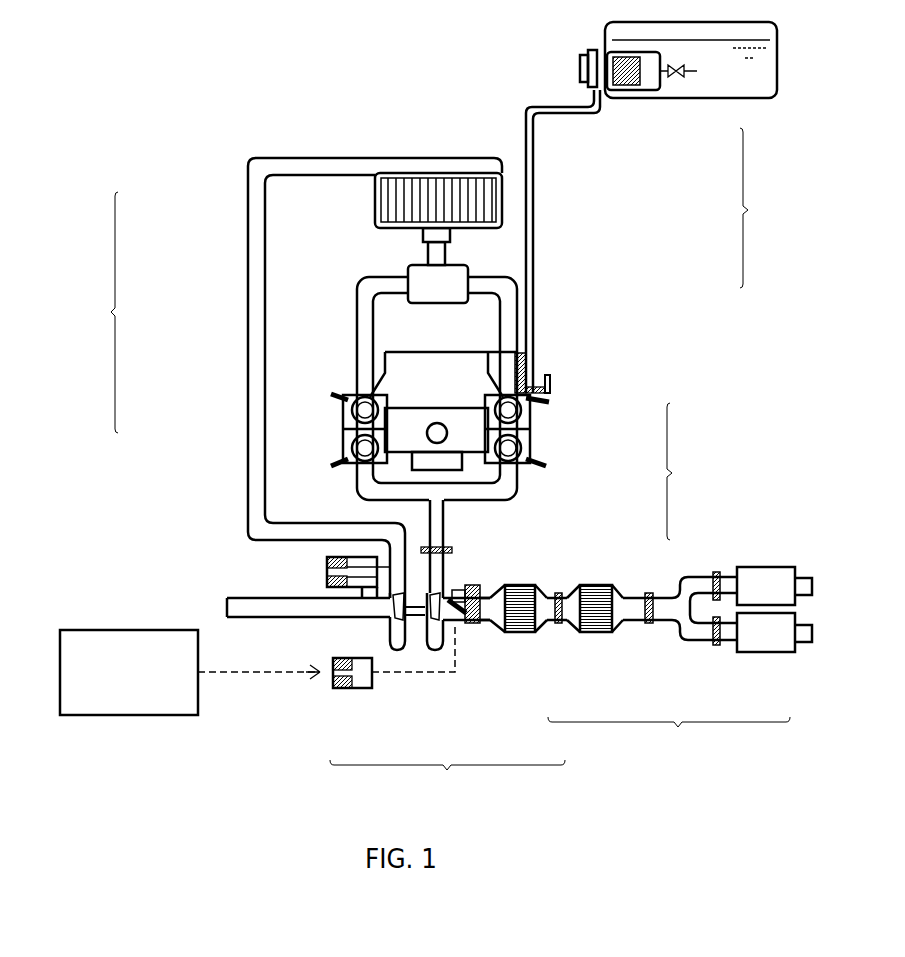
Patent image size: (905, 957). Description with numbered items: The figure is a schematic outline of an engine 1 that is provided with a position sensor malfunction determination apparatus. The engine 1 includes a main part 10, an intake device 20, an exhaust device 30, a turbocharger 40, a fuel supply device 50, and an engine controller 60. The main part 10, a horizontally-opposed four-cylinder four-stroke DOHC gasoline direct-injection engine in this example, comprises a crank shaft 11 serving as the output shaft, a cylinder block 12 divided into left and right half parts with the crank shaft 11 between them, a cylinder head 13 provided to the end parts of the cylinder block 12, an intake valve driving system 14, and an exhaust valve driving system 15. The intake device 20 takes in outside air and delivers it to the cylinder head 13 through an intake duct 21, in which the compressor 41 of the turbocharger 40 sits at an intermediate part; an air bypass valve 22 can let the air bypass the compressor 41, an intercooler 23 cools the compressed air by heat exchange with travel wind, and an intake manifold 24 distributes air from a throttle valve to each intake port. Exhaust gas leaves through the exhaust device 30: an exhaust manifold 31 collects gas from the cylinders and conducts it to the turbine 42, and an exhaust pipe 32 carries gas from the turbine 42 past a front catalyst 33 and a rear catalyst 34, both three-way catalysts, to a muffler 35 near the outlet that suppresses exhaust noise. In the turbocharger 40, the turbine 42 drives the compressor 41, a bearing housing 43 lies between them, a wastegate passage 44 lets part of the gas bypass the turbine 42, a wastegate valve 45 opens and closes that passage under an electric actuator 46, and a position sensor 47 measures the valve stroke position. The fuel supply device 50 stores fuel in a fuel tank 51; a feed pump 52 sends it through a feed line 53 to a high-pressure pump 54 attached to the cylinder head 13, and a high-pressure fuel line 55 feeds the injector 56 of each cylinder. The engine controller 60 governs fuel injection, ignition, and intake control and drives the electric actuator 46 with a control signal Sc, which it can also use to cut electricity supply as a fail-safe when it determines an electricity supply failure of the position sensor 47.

The engine 1 is at (246, 70).
The main part 10 is at (532, 408).
The crank shaft 11 is at (535, 460).
The cylinder block 12 is at (413, 443).
The cylinder head 13 is at (535, 440).
The intake valve driving system 14 is at (537, 408).
The exhaust valve driving system 15 is at (533, 450).
The intake device 20 is at (101, 312).
The intake duct 21 is at (252, 313).
The air bypass valve 22 is at (313, 560).
The intercooler 23 is at (417, 203).
The intake manifold 24 is at (500, 303).
The exhaust device 30 is at (669, 740).
The exhaust manifold 31 is at (472, 492).
The exhaust pipe 32 is at (635, 612).
The front catalyst 33 is at (520, 632).
The rear catalyst 34 is at (595, 632).
The muffler 35 is at (768, 606).
The turbocharger 40 is at (447, 706).
The compressor 41 is at (400, 654).
The turbine 42 is at (440, 630).
The bearing housing 43 is at (433, 652).
The wastegate passage 44 is at (497, 627).
The wastegate valve 45 is at (465, 630).
The electric actuator 46 is at (357, 690).
The position sensor 47 is at (483, 627).
The fuel supply device 50 is at (760, 208).
The fuel tank 51 is at (633, 100).
The feed pump 52 is at (670, 92).
The feed line 53 is at (533, 188).
The high-pressure pump 54 is at (553, 384).
The high-pressure fuel line 55 is at (533, 303).
The injector 56 is at (533, 337).
The engine controller 60 is at (130, 718).
The control signal Sc is at (268, 680).